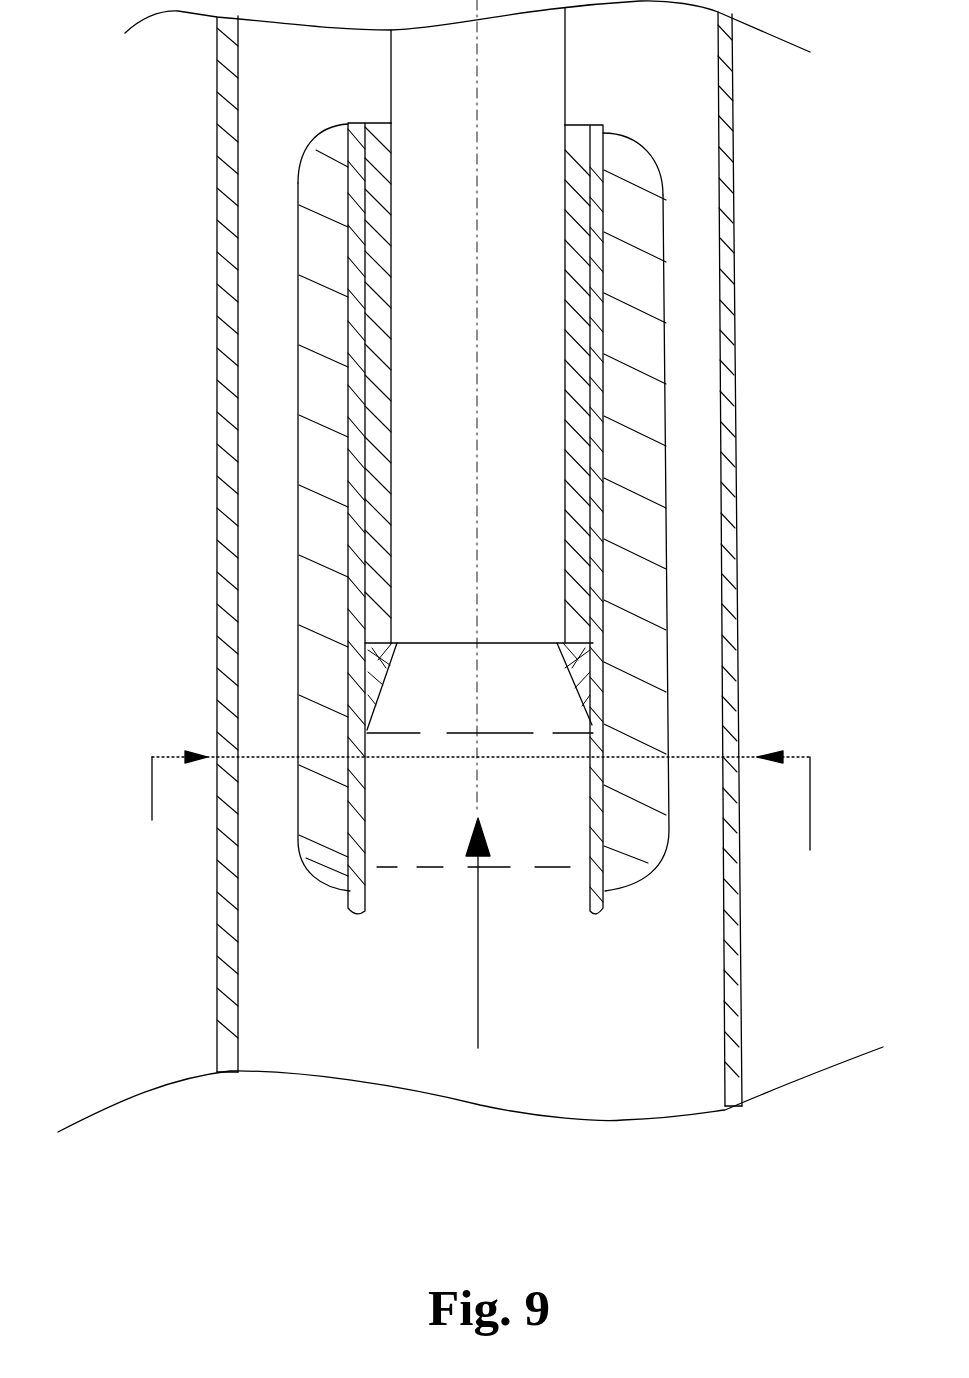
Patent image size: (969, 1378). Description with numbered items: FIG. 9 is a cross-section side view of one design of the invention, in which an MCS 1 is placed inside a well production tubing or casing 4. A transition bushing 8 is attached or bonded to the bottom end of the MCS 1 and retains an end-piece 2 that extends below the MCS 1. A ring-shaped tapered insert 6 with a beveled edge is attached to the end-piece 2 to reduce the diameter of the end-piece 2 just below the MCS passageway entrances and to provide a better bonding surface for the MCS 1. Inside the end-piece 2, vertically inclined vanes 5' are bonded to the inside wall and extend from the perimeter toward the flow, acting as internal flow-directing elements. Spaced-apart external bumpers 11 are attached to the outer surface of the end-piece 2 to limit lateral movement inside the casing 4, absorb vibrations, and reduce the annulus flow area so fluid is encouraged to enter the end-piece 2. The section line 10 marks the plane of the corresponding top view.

The MCS 1 is at (458, 499).
The end-piece 2 is at (360, 236).
The well production tubing or casing 4 is at (230, 126).
The vertically inclined vanes 5' is at (334, 756).
The ring-shaped tapered insert 6 is at (375, 672).
The transition bushing 8 is at (378, 326).
The section line 10 is at (481, 824).
The external bumpers 11 is at (330, 395).